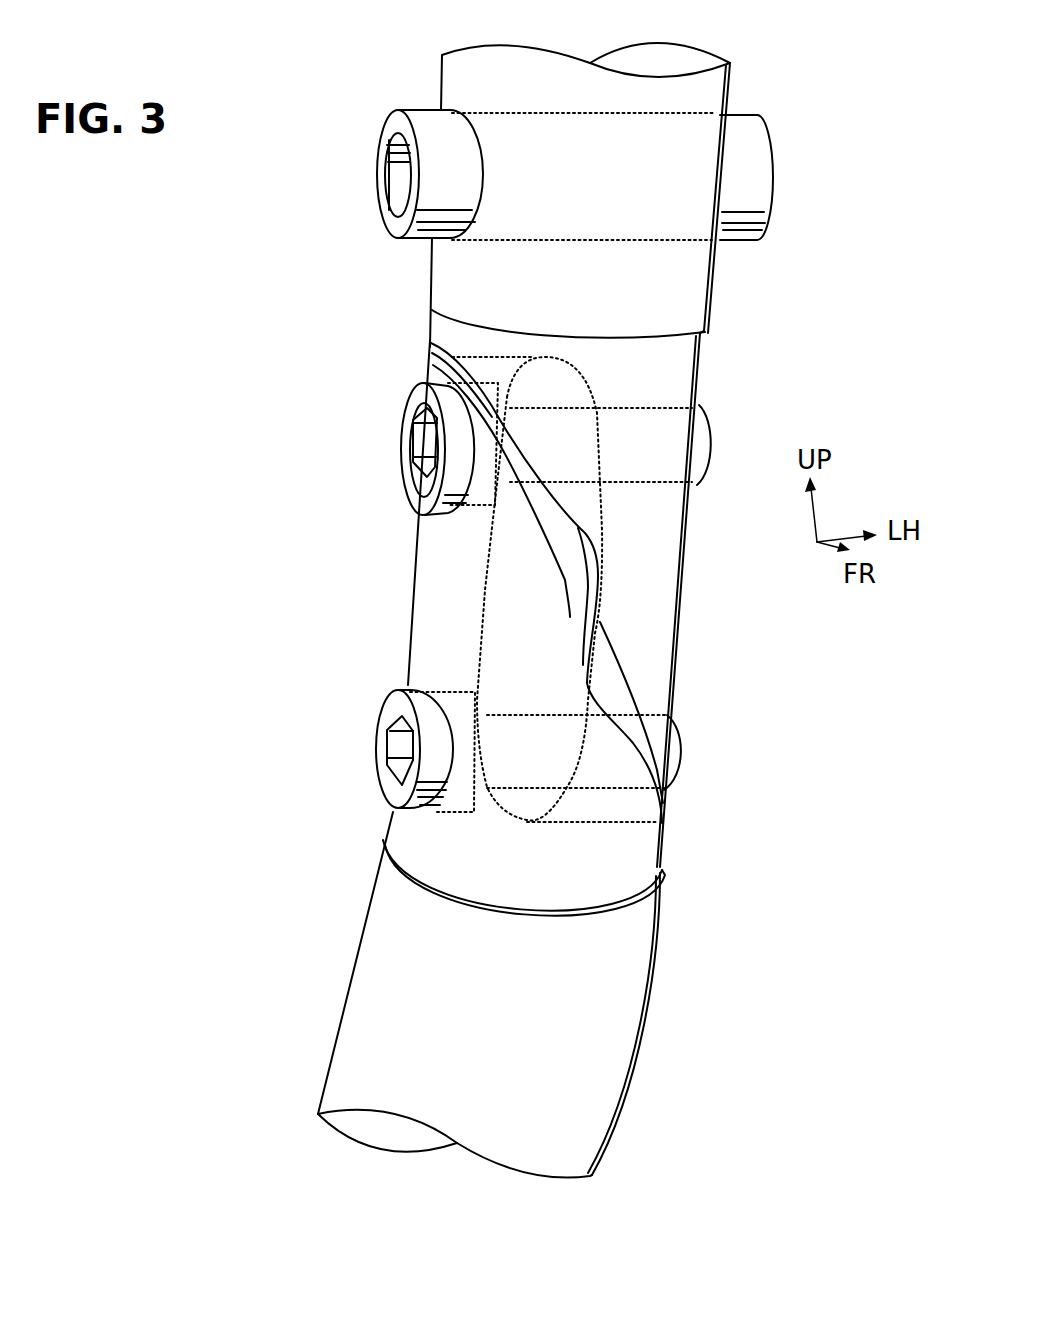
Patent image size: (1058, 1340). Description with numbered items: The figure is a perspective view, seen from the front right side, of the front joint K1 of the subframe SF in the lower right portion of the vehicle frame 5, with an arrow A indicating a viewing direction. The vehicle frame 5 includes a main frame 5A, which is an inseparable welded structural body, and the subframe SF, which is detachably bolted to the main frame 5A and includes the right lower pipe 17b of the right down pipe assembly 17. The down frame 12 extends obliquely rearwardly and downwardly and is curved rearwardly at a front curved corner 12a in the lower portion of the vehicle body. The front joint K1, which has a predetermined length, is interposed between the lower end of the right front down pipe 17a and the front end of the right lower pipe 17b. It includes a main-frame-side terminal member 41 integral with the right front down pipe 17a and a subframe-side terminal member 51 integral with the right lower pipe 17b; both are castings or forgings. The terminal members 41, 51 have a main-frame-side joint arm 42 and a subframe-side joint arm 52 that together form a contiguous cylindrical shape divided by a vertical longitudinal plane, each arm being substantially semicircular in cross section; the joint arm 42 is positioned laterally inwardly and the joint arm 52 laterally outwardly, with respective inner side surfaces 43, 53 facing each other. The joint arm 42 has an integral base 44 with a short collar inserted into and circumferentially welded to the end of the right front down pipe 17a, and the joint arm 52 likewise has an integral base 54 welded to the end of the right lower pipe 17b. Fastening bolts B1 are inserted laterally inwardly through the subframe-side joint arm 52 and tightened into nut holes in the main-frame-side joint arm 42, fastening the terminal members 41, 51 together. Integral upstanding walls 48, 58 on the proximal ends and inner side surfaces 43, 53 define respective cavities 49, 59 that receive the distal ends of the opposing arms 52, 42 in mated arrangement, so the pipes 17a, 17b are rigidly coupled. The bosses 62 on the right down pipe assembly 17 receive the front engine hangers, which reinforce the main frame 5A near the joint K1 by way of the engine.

The main frame 5A is at (404, 70).
The vehicle frame 5 is at (545, 178).
The down frame 12 is at (509, 593).
The right down pipe assembly 17 is at (509, 593).
The right front down pipe 17a is at (438, 288).
The right lower pipe 17b is at (452, 995).
The front curved corner 12a is at (345, 1052).
The boss 62 is at (392, 128).
The main-frame-side terminal member 41 is at (545, 624).
The main-frame-side joint arm 42 is at (663, 590).
The inner side surface 43 is at (451, 589).
The base 44 is at (683, 368).
The upstanding wall 48 is at (525, 427).
The cavity 49 is at (533, 435).
The subframe-side terminal member 51 is at (400, 541).
The subframe-side joint arm 52 is at (427, 593).
The inner side surface 53 is at (503, 645).
The base 54 is at (410, 838).
The upstanding wall 58 is at (630, 777).
The cavity 59 is at (603, 763).
The fastening bolt B1 is at (413, 487).
The front joint K1 is at (340, 350).
The subframe SF is at (338, 967).
The viewing direction A is at (287, 670).